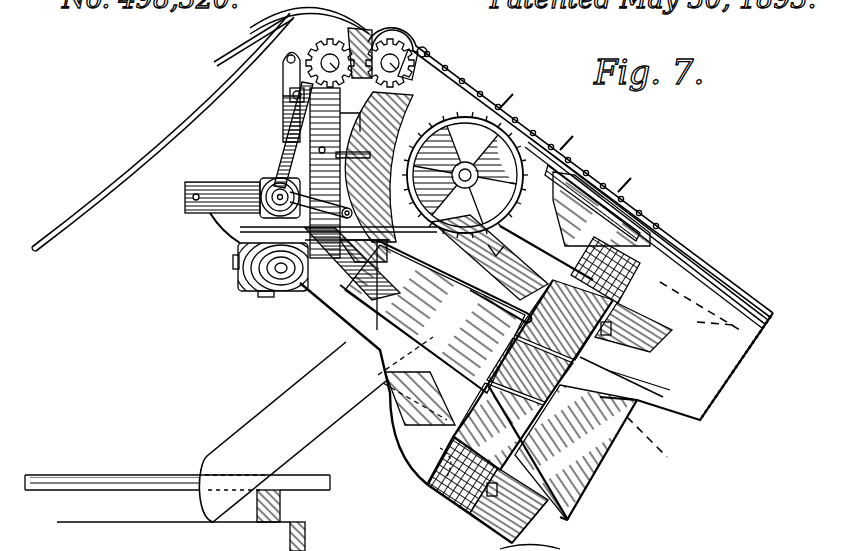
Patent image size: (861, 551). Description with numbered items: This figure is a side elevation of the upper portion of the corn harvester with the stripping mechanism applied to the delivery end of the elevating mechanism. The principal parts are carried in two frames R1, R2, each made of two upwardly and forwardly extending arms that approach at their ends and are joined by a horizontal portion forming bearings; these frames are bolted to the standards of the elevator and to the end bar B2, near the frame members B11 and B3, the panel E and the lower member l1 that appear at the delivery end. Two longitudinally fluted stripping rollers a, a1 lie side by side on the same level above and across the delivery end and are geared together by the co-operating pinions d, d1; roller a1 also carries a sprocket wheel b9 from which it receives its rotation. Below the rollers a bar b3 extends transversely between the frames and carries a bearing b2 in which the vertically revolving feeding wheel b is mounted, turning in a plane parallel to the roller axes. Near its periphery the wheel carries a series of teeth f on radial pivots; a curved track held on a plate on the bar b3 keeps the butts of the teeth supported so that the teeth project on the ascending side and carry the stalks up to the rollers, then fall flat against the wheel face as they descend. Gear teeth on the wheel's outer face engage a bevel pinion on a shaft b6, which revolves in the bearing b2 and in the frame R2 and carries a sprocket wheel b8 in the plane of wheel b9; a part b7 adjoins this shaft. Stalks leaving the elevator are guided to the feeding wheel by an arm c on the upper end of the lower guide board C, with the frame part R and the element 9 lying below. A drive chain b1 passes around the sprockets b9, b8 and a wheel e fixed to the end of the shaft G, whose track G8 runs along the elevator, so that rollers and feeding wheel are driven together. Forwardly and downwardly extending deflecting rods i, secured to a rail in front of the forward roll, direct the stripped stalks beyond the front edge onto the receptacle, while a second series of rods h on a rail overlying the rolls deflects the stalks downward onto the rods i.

The deflecting rods i is at (156, 153).
The rods h is at (291, 36).
The stripping roller a is at (298, 54).
The pinion d1 is at (323, 52).
The pinion d is at (404, 42).
The sprocket wheel b9 is at (432, 31).
The stripping roller a1 is at (417, 85).
The shaft G is at (530, 133).
The chain track G8 is at (646, 233).
The panel E is at (676, 369).
The block B'' B11 is at (625, 272).
The board B3 is at (532, 400).
The end bar B2 is at (482, 490).
The lower guide board C is at (416, 356).
The frame edge R is at (380, 386).
The scoop plate 9 is at (278, 427).
The drive chain b1 is at (192, 200).
The shaft b6 is at (262, 184).
The bearing b2 is at (238, 227).
The post b7 is at (282, 136).
The frame R2 is at (290, 95).
The sprocket wheel b8 is at (240, 240).
The bar b3 is at (252, 278).
The feeding wheel b is at (328, 129).
The teeth f is at (353, 147).
The arm c is at (379, 167).
The wheel e is at (522, 203).
The frame R1 is at (512, 257).
The lower member l' l1 is at (531, 541).